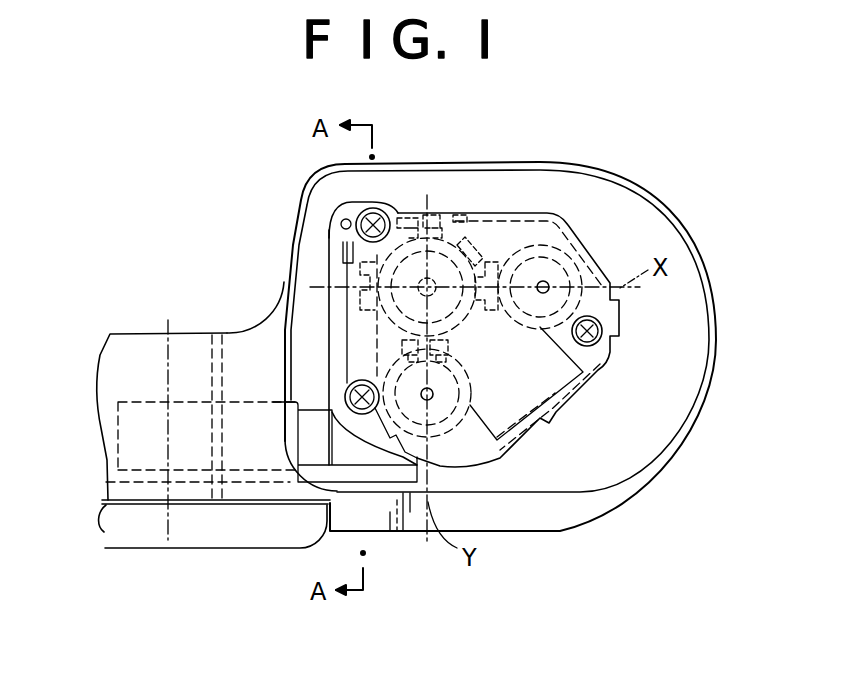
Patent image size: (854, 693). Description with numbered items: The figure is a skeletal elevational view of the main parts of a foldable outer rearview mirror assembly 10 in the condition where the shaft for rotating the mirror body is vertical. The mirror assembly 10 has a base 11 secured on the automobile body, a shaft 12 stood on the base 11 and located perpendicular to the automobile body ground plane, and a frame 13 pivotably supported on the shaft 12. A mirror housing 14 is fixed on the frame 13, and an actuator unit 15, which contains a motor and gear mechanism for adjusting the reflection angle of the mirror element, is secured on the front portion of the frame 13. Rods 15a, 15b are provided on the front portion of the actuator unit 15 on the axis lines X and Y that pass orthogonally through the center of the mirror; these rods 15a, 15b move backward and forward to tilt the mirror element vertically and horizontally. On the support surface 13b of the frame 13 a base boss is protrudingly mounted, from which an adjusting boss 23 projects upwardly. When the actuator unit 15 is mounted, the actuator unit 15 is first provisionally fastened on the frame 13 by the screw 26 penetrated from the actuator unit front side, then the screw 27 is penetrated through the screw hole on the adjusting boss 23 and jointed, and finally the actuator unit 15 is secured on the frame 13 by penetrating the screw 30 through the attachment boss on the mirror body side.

The mirror assembly 10 is at (623, 167).
The base 11 is at (247, 530).
The shaft 12 is at (167, 357).
The frame 13 is at (227, 482).
The support surface 13b is at (328, 262).
The mirror housing 14 is at (704, 261).
The actuator unit 15 is at (560, 215).
The rod 15a is at (547, 285).
The rod 15b is at (434, 398).
The adjusting boss 23 is at (335, 224).
The screw 26 is at (345, 398).
The screw 27 is at (383, 212).
The screw 30 is at (597, 341).